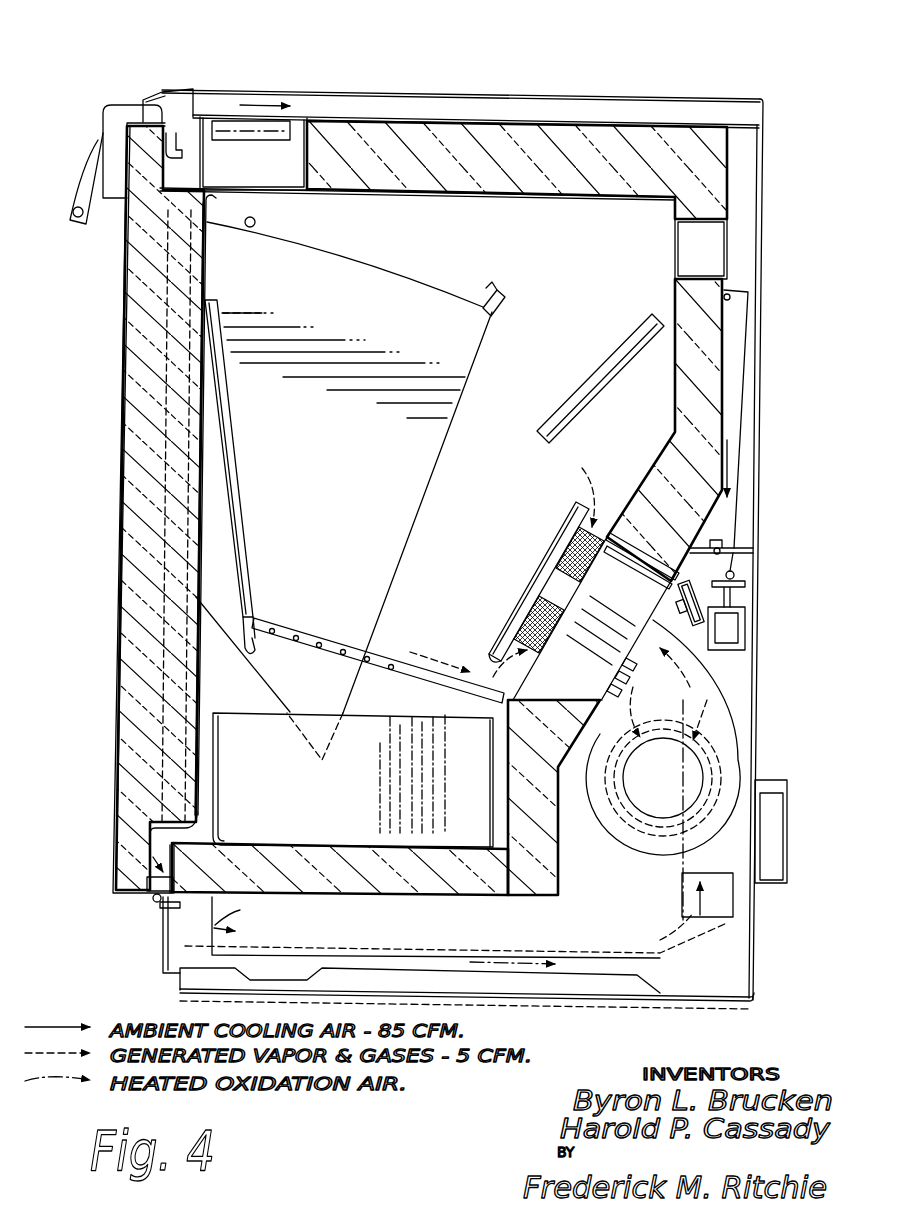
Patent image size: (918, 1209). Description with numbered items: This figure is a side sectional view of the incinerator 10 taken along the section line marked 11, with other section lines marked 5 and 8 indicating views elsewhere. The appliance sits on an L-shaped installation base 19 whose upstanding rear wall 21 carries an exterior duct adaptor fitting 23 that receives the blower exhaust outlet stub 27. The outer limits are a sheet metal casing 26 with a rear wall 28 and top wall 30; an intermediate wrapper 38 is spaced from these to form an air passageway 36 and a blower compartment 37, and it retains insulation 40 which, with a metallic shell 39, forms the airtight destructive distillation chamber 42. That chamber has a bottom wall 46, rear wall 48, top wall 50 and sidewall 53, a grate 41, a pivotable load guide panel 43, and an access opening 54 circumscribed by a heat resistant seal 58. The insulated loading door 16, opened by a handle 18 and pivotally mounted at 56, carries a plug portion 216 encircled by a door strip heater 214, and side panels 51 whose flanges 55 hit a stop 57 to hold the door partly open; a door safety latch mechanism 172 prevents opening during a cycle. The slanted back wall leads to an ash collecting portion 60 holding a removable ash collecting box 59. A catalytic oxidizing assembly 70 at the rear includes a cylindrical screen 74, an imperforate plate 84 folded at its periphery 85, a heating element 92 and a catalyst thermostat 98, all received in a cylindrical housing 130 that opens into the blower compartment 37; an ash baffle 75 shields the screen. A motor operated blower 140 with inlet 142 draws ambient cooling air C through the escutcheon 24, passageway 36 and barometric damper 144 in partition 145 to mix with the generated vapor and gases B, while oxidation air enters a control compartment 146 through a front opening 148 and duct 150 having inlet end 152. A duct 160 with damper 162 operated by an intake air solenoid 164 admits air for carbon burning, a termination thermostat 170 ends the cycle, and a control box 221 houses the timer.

The incinerator 10 is at (530, 99).
The insulated loading door 16 is at (120, 464).
The handle 18 is at (72, 203).
The installation base 19 is at (754, 979).
The upstanding rear wall 21 is at (754, 951).
The exterior duct adaptor fitting 23 is at (777, 886).
The air inlet escutcheon 24 is at (160, 92).
The sheet metal casing 26 is at (735, 100).
The exhaust outlet stub 27 is at (788, 862).
The rear wall 28 is at (766, 146).
The top wall 30 is at (622, 99).
The air passageway 36 is at (385, 97).
The blower compartment 37 is at (576, 892).
The intermediate wrapper 38 is at (450, 101).
The metallic box-like shell 39 is at (414, 198).
The insulation 40 is at (578, 172).
The grate 41 is at (325, 622).
The destructive distillation chamber 42 is at (553, 309).
The pivotable load guide panel 43 is at (236, 506).
The bottom wall 46 is at (503, 875).
The rear wall 48 is at (672, 405).
The top wall 50 is at (470, 198).
The side panels 51 is at (460, 405).
The sidewall 53 is at (352, 245).
The access opening 54 is at (150, 830).
The outwardly turned flange 55 is at (486, 290).
The door mounting 56 is at (152, 901).
The stop 57 is at (250, 228).
The heat resistant seal 58 is at (147, 872).
The ash collecting box 59 is at (402, 722).
The ash collecting portion 60 is at (500, 800).
The catalytic oxidizing assembly 70 is at (587, 533).
The cylindrical screen 74 is at (576, 575).
The ash baffle 75 is at (600, 383).
The imperforate rectangular plate 84 is at (518, 610).
The periphery 85 is at (508, 635).
The heating element 92 is at (570, 498).
The catalyst thermostat 98 is at (680, 596).
The cylindrical housing 130 is at (608, 533).
The motor operated blower 140 is at (672, 865).
The blower inlet 142 is at (663, 778).
The barometric damper 144 is at (748, 566).
The partition 145 is at (747, 545).
The control compartment 146 is at (566, 952).
The opening 148 is at (165, 931).
The duct 150 is at (716, 700).
The inlet end 152 is at (708, 918).
The duct 160 is at (682, 280).
The damper 162 is at (730, 234).
The intake air solenoid 164 is at (740, 625).
The termination thermostat 170 is at (592, 727).
The door safety latch mechanism 172 is at (192, 180).
The door strip heater 214 is at (212, 203).
The plug portion 216 is at (200, 668).
The control box 221 is at (305, 957).
The section line 5 is at (500, 552).
The section line 8 is at (118, 122).
The section line 11 is at (245, 755).
The generated vapor and gases arrows B is at (424, 655).
The ambient cooling air arrows C is at (125, 101).